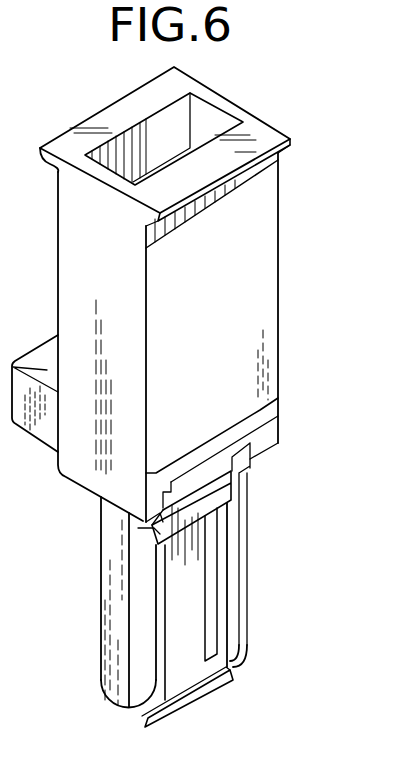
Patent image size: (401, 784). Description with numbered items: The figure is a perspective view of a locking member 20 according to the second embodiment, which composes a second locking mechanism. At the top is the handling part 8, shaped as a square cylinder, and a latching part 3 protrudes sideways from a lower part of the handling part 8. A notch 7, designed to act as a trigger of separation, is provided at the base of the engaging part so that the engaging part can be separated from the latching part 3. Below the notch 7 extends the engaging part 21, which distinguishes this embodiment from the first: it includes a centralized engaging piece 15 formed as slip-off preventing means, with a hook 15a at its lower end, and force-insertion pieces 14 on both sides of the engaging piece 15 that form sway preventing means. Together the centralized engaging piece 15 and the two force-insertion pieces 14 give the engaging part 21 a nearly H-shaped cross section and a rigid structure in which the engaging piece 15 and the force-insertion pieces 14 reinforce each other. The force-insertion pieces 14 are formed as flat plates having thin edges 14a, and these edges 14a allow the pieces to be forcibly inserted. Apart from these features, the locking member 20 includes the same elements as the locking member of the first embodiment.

The locking member 20 is at (308, 245).
The handling part 8 is at (267, 318).
The latching part 3 is at (40, 358).
The notch 7 is at (247, 476).
The engaging part 21 is at (240, 537).
The force-insertion pieces 14 is at (118, 606).
The thin edges 14a is at (100, 523).
The engaging piece 15 is at (185, 665).
The hook 15a is at (213, 688).